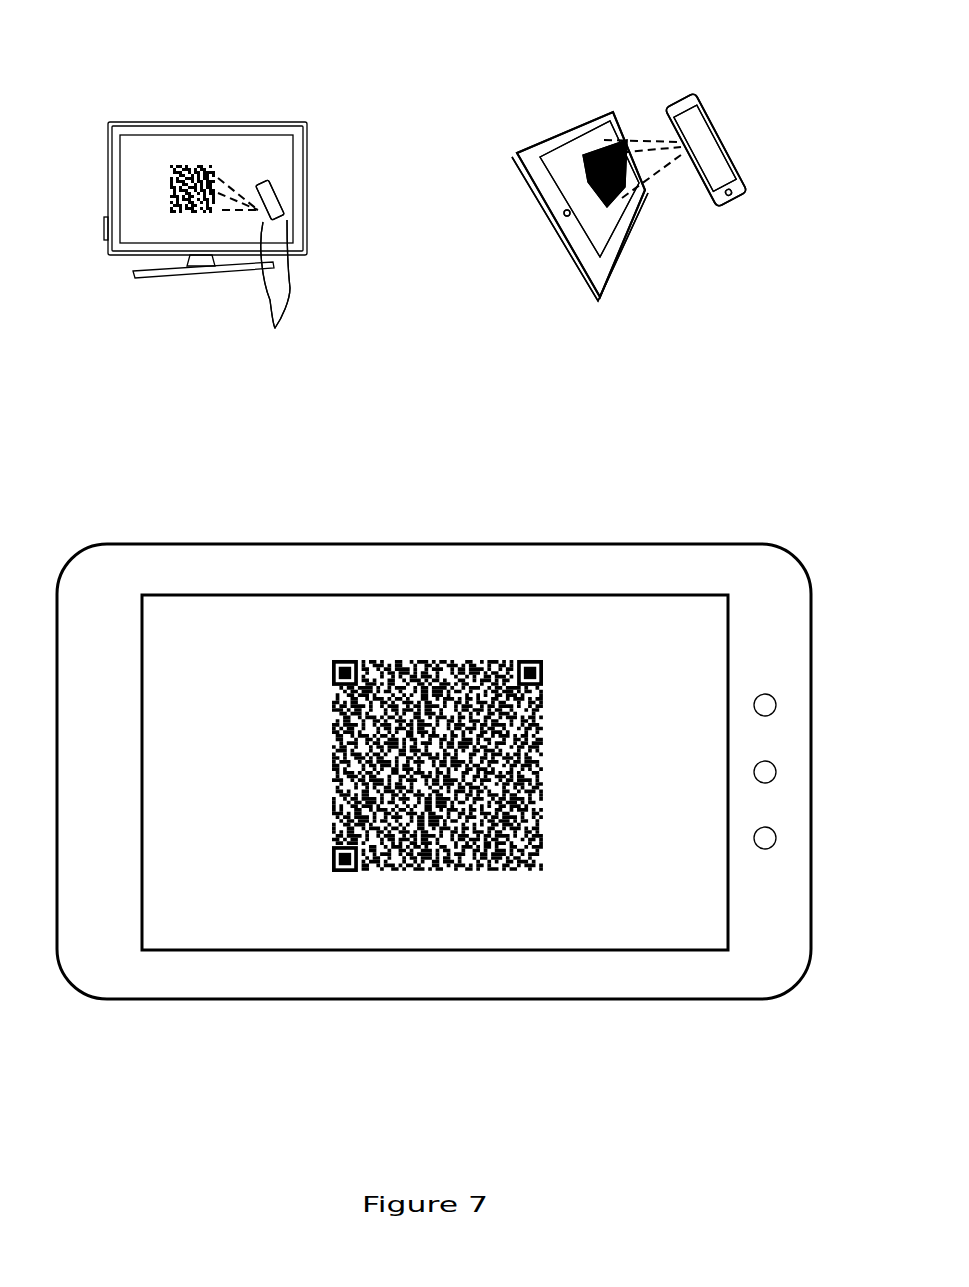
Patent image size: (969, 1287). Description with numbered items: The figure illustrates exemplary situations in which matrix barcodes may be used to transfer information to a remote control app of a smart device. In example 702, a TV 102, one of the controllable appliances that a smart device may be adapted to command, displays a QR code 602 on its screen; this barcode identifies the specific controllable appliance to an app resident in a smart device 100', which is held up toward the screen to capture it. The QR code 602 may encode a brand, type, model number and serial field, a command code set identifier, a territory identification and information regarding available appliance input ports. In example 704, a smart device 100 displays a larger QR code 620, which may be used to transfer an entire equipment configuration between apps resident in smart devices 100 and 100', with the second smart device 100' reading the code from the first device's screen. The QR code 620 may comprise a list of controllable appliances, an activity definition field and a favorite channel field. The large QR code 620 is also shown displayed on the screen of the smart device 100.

The smart device 100 is at (434, 564).
The smart device 100' is at (537, 233).
The TV 102 is at (160, 128).
The QR code 602 is at (192, 167).
The QR code 620 is at (435, 668).
The example 702 is at (184, 230).
The example 704 is at (684, 312).